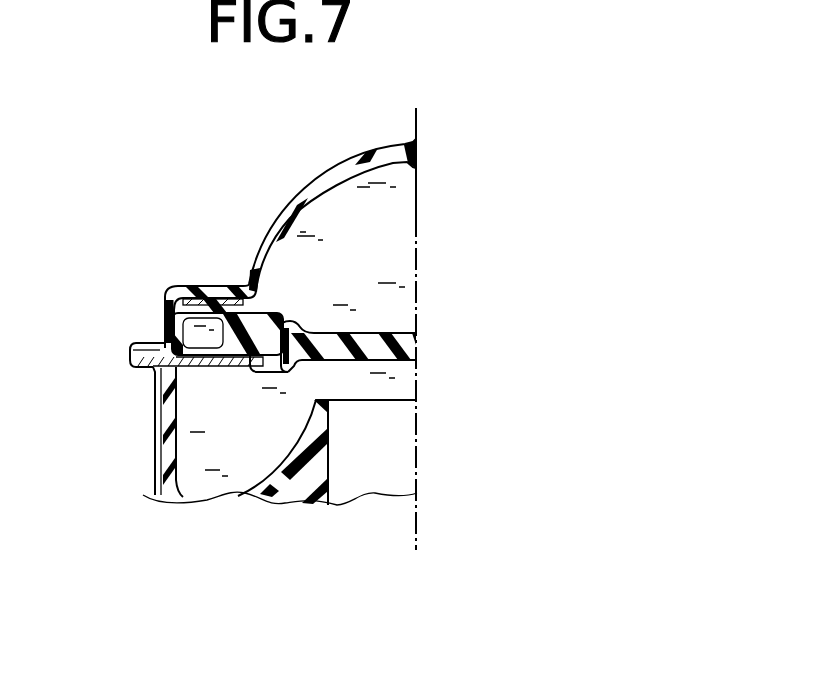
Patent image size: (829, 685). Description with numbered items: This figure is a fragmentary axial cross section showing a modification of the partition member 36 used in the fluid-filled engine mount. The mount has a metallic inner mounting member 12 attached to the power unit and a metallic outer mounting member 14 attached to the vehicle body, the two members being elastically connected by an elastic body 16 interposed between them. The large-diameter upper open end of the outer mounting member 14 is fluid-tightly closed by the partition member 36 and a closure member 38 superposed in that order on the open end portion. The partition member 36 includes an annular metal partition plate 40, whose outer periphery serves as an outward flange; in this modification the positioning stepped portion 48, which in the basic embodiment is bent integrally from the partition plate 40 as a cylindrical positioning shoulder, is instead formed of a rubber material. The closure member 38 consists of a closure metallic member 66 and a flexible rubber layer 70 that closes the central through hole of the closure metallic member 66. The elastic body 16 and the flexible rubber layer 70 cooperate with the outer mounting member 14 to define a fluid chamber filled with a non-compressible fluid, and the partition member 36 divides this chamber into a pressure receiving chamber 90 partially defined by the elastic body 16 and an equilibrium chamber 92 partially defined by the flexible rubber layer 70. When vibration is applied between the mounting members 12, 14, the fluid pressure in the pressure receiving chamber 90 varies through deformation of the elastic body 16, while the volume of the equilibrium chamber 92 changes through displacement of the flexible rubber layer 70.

The inner mounting member 12 is at (367, 476).
The outer mounting member 14 is at (146, 469).
The elastic body 16 is at (326, 498).
The partition member 36 is at (204, 376).
The closure member 38 is at (170, 280).
The partition plate 40 is at (285, 325).
The positioning stepped portion 48 is at (233, 330).
The closure metallic member 66 is at (218, 300).
The flexible rubber layer 70 is at (277, 222).
The pressure receiving chamber 90 is at (254, 472).
The equilibrium chamber 92 is at (394, 233).